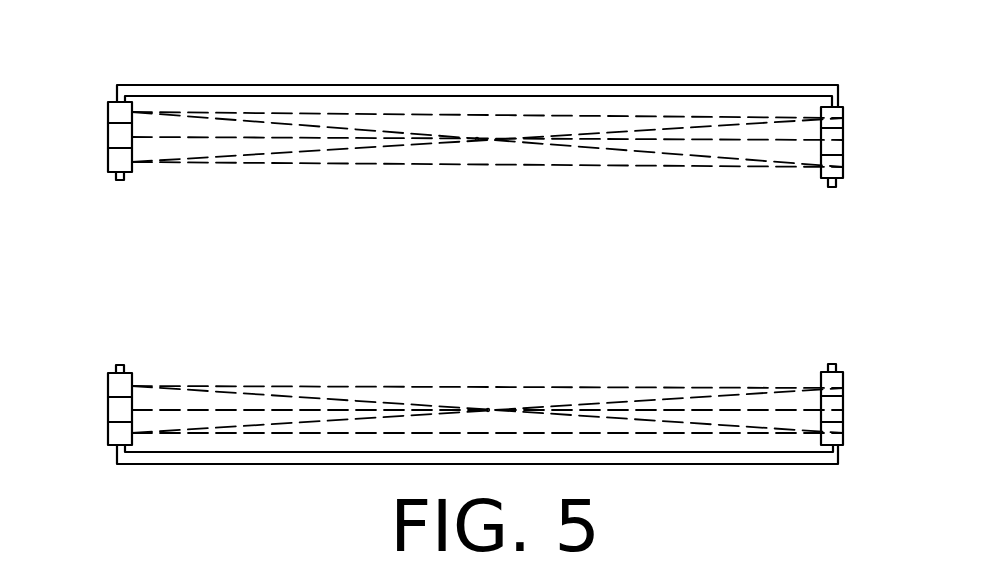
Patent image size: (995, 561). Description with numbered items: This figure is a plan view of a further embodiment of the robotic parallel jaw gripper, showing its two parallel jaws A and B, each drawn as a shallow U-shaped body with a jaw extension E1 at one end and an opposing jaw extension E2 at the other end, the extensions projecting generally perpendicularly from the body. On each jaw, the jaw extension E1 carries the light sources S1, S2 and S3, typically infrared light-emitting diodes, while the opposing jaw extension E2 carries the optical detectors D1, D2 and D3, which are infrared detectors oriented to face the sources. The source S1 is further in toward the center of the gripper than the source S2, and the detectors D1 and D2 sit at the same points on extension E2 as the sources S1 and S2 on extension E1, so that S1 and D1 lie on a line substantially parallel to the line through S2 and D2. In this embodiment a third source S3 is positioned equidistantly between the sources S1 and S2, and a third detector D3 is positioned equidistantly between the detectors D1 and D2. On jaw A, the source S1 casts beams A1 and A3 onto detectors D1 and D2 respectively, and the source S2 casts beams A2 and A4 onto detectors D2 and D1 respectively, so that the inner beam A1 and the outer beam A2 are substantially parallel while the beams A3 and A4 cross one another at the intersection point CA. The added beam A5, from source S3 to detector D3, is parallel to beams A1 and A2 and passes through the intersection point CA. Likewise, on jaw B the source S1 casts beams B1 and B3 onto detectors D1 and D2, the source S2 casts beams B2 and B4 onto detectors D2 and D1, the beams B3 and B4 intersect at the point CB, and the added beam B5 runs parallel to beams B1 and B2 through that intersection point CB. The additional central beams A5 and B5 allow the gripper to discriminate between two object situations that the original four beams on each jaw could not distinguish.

The jaw A is at (580, 85).
The jaw B is at (636, 466).
The light source S1 is at (107, 164).
The light source S2 is at (107, 106).
The light source S3 is at (107, 137).
The optical detector D1 is at (844, 161).
The optical detector D2 is at (845, 121).
The detector D3 is at (845, 141).
The jaw extension E1 is at (122, 181).
The jaw extension E2 is at (828, 189).
The light beam A1 is at (510, 165).
The light beam A2 is at (632, 121).
The light beam A3 is at (312, 148).
The light beam A4 is at (710, 157).
The light beam A5 is at (219, 139).
The intersection point CA is at (470, 142).
The light beam B1 is at (342, 387).
The light beam B2 is at (417, 432).
The light beam B3 is at (615, 402).
The light beam B4 is at (263, 393).
The light beam B5 is at (704, 410).
The intersection point CB is at (488, 410).